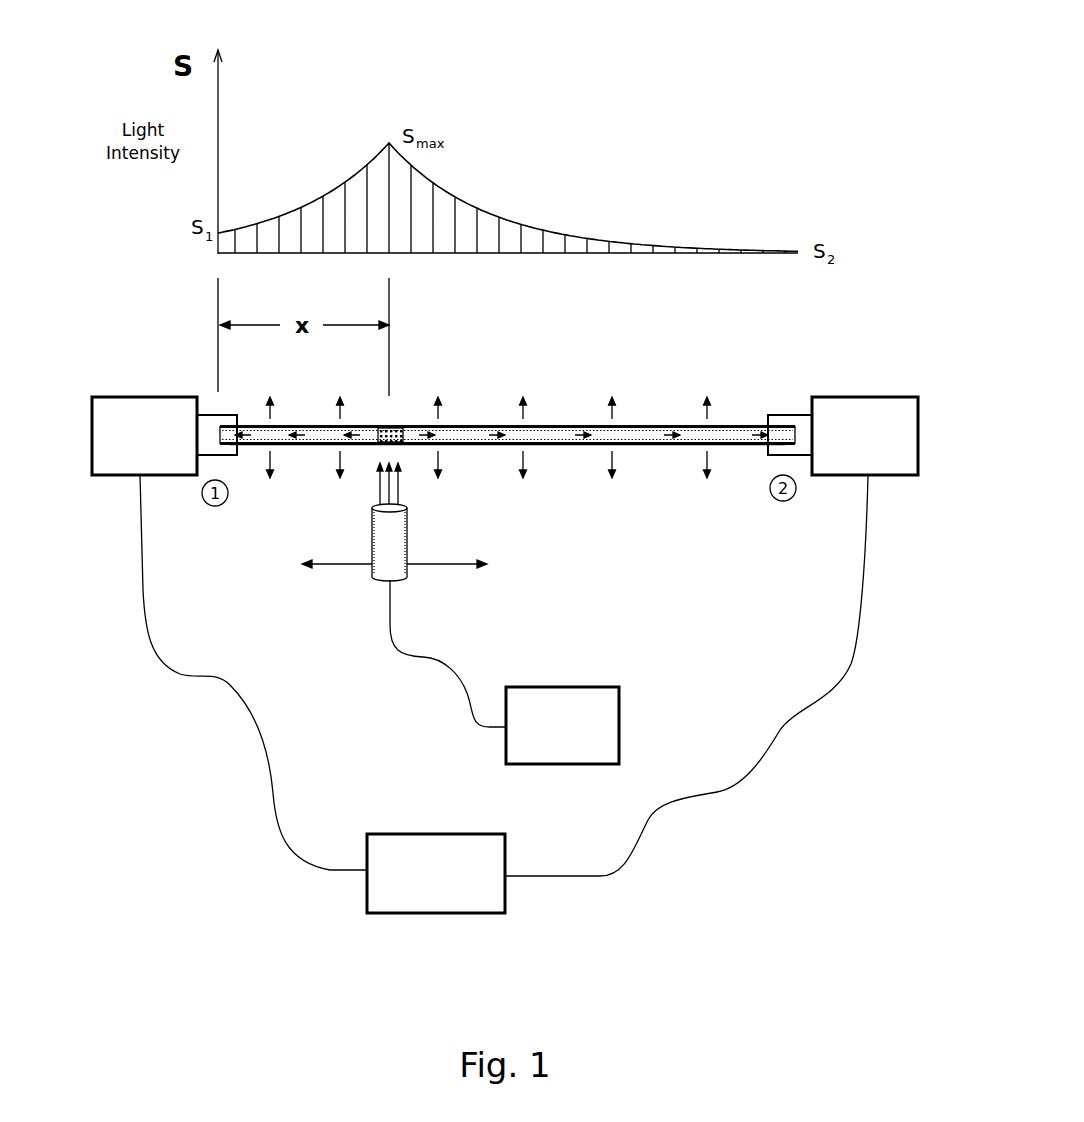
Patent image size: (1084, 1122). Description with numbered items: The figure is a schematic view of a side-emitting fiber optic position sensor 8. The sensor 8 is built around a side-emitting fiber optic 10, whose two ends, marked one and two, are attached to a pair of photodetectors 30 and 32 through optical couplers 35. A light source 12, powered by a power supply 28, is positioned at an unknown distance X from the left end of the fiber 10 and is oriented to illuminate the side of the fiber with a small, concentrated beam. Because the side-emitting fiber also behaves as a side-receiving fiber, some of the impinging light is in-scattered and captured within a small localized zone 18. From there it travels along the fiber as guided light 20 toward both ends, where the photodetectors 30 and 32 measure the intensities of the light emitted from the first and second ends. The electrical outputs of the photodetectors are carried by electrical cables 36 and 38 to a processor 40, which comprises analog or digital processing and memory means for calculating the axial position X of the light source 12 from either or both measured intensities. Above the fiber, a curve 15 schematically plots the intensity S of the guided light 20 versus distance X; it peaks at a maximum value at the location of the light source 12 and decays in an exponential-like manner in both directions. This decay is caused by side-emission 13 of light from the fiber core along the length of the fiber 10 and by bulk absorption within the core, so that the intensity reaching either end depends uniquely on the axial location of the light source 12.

The side-emitting fiber optic position sensor 8 is at (861, 65).
The side-emitting fiber optic 10 is at (556, 416).
The light source 12 is at (413, 542).
The side-emission 13 is at (480, 437).
The curve 15 is at (478, 198).
The localized zone 18 is at (395, 417).
The guided light 20 is at (678, 447).
The power supply 28 is at (576, 682).
The photodetector 30 is at (143, 392).
The photodetector 32 is at (862, 392).
The optical coupler 35 is at (213, 413).
The electrical cable 36 is at (215, 693).
The electrical cable 38 is at (783, 748).
The processor 40 is at (512, 910).